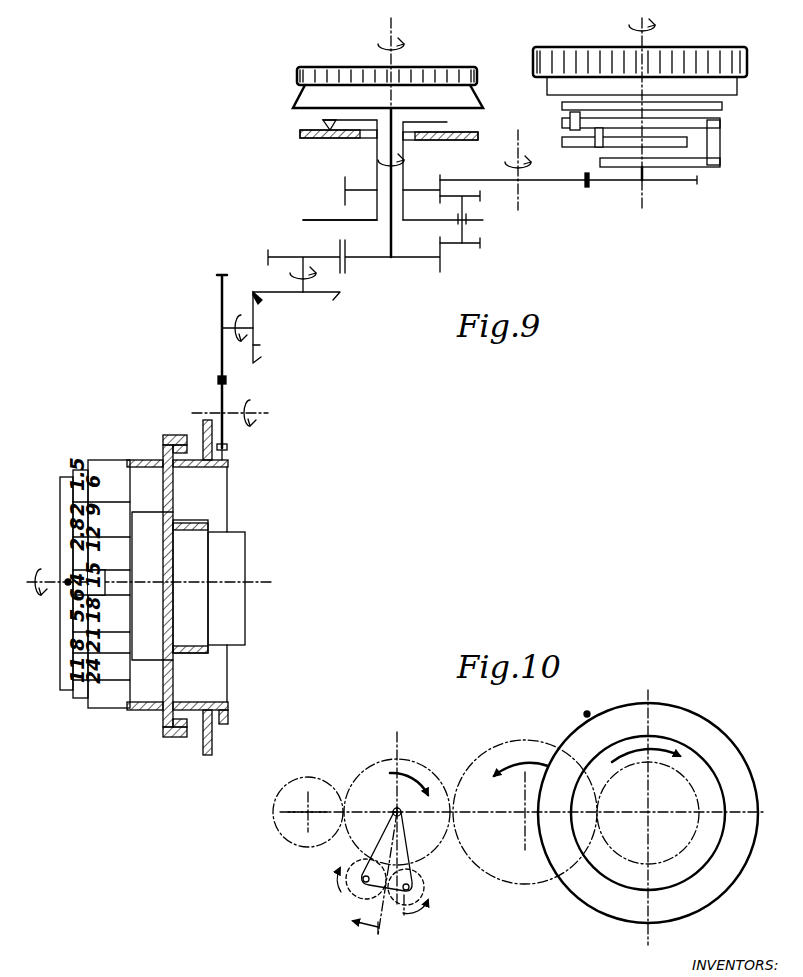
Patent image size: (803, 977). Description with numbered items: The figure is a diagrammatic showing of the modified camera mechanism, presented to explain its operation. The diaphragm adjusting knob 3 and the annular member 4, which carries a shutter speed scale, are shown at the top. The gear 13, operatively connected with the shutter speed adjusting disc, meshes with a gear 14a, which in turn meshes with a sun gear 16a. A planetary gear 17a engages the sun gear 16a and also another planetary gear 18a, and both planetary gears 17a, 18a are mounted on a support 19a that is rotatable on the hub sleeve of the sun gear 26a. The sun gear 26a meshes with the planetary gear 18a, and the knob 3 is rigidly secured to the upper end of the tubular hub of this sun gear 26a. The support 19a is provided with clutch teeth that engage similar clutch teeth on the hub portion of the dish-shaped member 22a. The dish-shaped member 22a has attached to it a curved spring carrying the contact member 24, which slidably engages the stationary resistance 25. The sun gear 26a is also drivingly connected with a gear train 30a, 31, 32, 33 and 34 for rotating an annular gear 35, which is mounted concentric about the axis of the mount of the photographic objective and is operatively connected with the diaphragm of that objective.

In FIG. 9, the diaphragm adjusting knob 3 is at (424, 78).
In FIG. 9, the annular member 4 is at (697, 60).
In FIG. 10, the annular member 4 is at (725, 753).
In FIG. 9, the gear 13 is at (672, 183).
In FIG. 10, the gear 13 is at (682, 856).
In FIG. 9, the gear 14a is at (560, 183).
In FIG. 10, the gear 14a is at (492, 873).
In FIG. 9, the sun gear 16a is at (344, 188).
In FIG. 10, the sun gear 16a is at (381, 761).
In FIG. 9, the planetary gear 17a is at (472, 200).
In FIG. 10, the planetary gear 17a is at (404, 906).
In FIG. 9, the planetary gear 18a is at (470, 248).
In FIG. 10, the planetary gear 18a is at (363, 894).
In FIG. 9, the support 19a is at (304, 218).
In FIG. 10, the support 19a is at (385, 848).
In FIG. 9, the dish-shaped member 22a is at (447, 122).
In FIG. 9, the contact member 24 is at (329, 124).
In FIG. 9, the stationary resistance 25 is at (300, 135).
In FIG. 9, the sun gear 26a is at (408, 259).
In FIG. 10, the sun gear 26a is at (425, 764).
In FIG. 9, the gear train gear 30a is at (284, 253).
In FIG. 10, the gear train gear 30a is at (286, 823).
In FIG. 9, the gear train element 31 is at (322, 296).
In FIG. 9, the gear train element 32 is at (254, 345).
In FIG. 9, the gear train element 33 is at (222, 313).
In FIG. 9, the gear train element 34 is at (222, 396).
In FIG. 9, the annular gear 35 is at (228, 461).